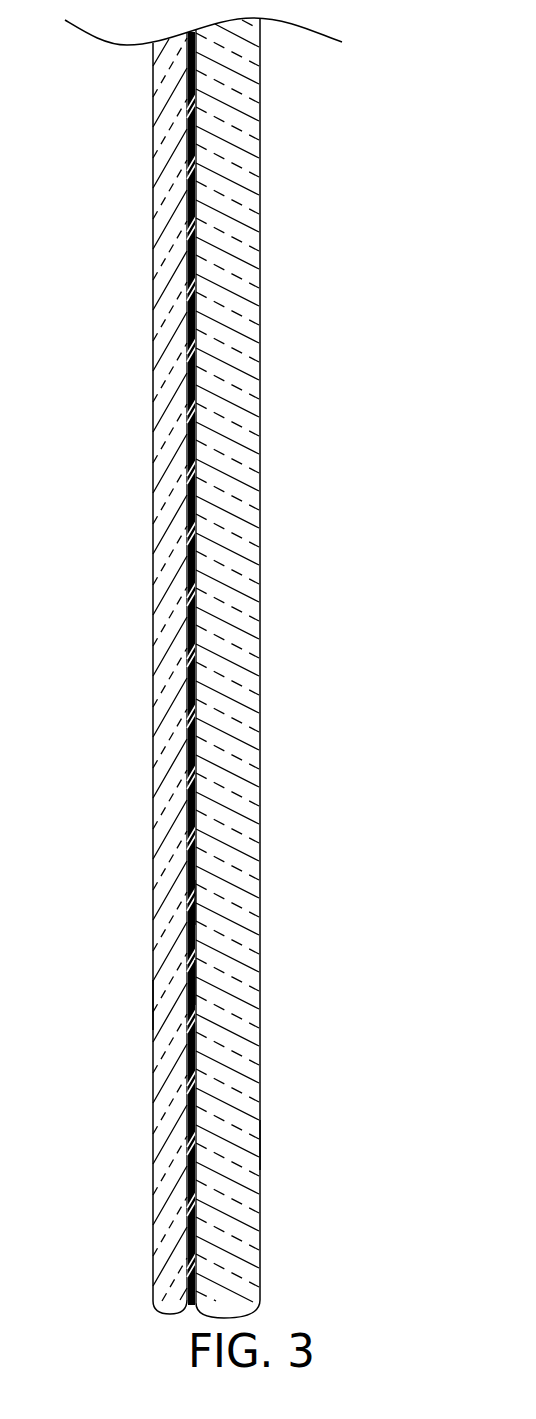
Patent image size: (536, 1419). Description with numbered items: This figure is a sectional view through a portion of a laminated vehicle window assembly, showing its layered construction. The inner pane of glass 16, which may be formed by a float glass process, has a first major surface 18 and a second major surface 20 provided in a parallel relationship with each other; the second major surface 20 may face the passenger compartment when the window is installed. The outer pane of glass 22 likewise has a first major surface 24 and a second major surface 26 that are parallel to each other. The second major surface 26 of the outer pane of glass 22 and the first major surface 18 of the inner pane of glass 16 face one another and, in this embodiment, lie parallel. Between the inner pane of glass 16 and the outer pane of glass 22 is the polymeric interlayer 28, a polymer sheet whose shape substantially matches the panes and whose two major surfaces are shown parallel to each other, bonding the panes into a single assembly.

The inner pane of glass 16 is at (152, 803).
The first major surface 18 is at (188, 925).
The second major surface 20 is at (152, 1005).
The outer pane of glass 22 is at (260, 802).
The first major surface 24 is at (260, 1142).
The second major surface 26 is at (196, 902).
The polymeric interlayer 28 is at (196, 983).